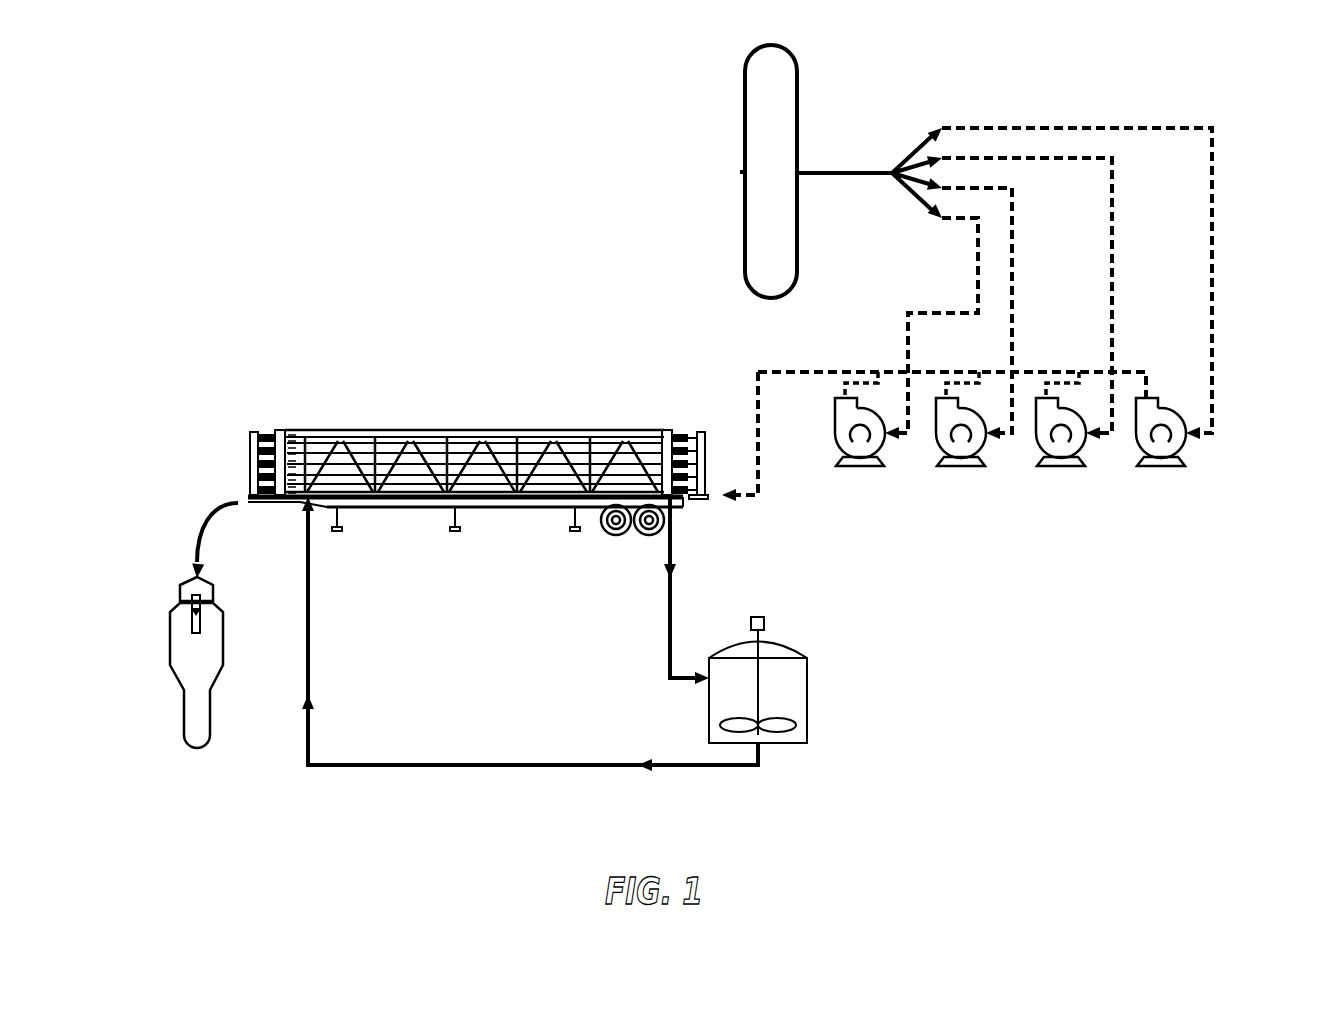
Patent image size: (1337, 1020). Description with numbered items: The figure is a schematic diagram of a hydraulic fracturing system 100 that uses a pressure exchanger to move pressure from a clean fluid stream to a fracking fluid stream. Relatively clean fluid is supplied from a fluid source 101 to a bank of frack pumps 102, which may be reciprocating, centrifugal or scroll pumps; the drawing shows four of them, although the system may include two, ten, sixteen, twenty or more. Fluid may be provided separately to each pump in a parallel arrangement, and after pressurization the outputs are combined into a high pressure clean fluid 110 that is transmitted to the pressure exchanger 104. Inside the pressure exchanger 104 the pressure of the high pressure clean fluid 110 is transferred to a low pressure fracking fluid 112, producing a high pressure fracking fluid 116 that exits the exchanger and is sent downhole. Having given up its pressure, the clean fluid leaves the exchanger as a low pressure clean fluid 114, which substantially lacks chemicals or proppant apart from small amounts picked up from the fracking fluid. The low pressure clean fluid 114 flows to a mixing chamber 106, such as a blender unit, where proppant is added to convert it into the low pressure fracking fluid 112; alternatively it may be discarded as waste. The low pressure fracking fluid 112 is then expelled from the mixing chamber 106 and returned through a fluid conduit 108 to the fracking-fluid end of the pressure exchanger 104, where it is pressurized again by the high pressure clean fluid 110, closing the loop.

The hydraulic fracturing system 100 is at (1190, 72).
The fluid source 101 is at (760, 151).
The frack pumps 102 is at (1150, 447).
The pressure exchanger 104 is at (410, 430).
The mixing chamber 106 is at (780, 697).
The fluid conduit 108 is at (432, 768).
The high pressure clean fluid 110 is at (758, 397).
The low pressure fracking fluid 112 is at (308, 764).
The low pressure clean fluid 114 is at (668, 656).
The high pressure fracking fluid 116 is at (200, 525).